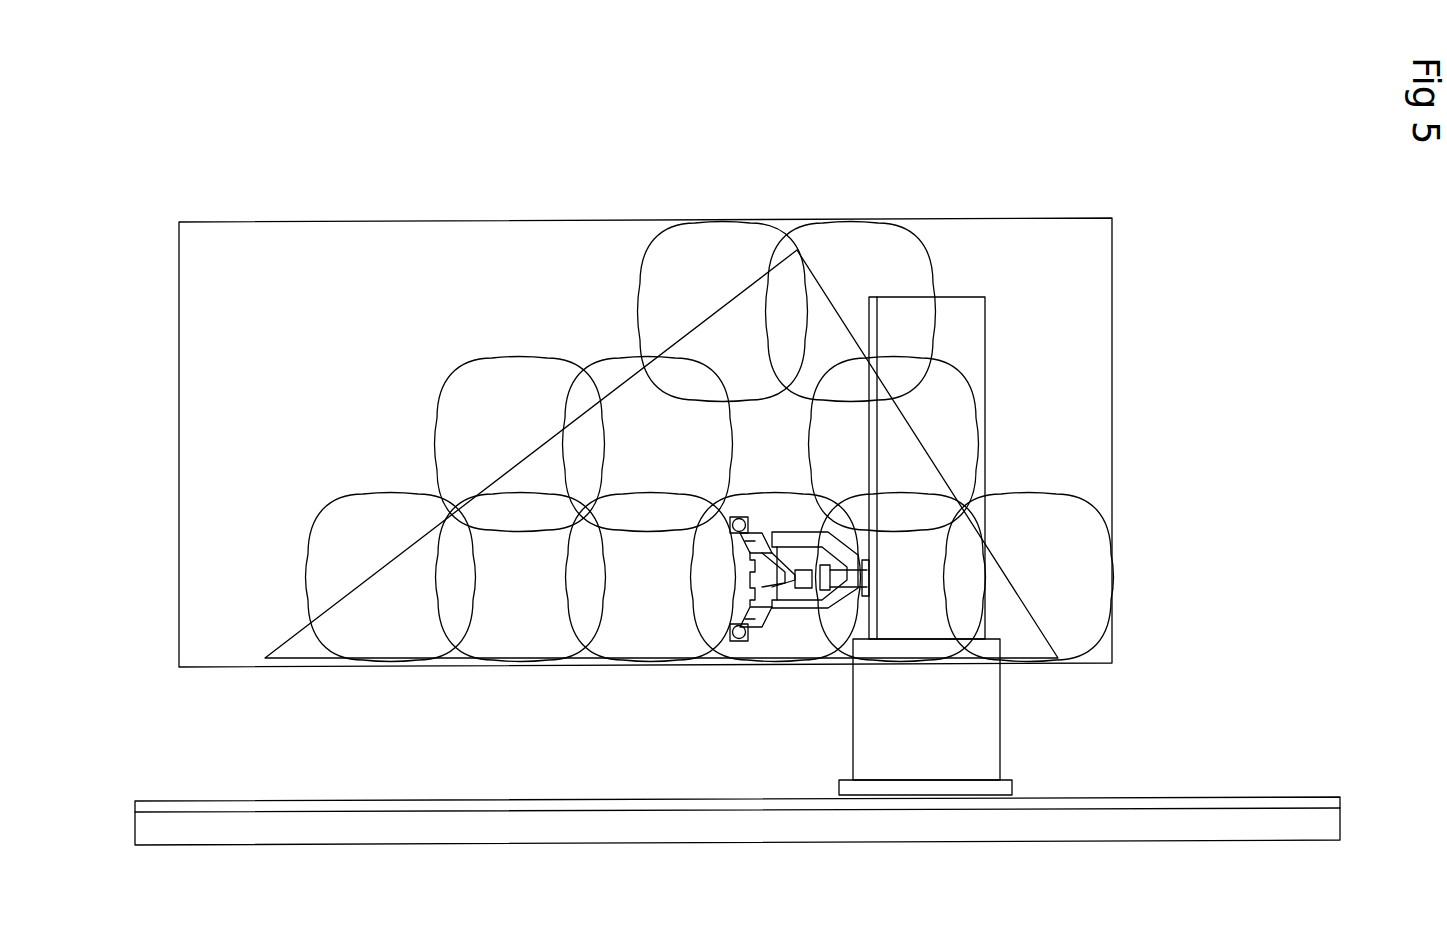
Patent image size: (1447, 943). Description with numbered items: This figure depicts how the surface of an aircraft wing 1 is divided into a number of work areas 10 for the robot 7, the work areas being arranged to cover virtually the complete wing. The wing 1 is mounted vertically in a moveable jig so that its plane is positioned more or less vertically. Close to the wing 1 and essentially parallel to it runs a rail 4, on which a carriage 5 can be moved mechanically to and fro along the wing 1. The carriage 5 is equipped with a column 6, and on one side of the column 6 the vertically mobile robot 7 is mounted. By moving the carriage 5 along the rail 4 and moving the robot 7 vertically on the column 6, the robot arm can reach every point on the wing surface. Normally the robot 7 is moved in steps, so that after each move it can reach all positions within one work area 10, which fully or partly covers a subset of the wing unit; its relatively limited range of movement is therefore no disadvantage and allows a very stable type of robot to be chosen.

The wing 1 is at (1017, 583).
The rail 4 is at (650, 797).
The carriage 5 is at (1017, 790).
The column 6 is at (989, 354).
The robot 7 is at (797, 618).
The work area 10 is at (305, 573).